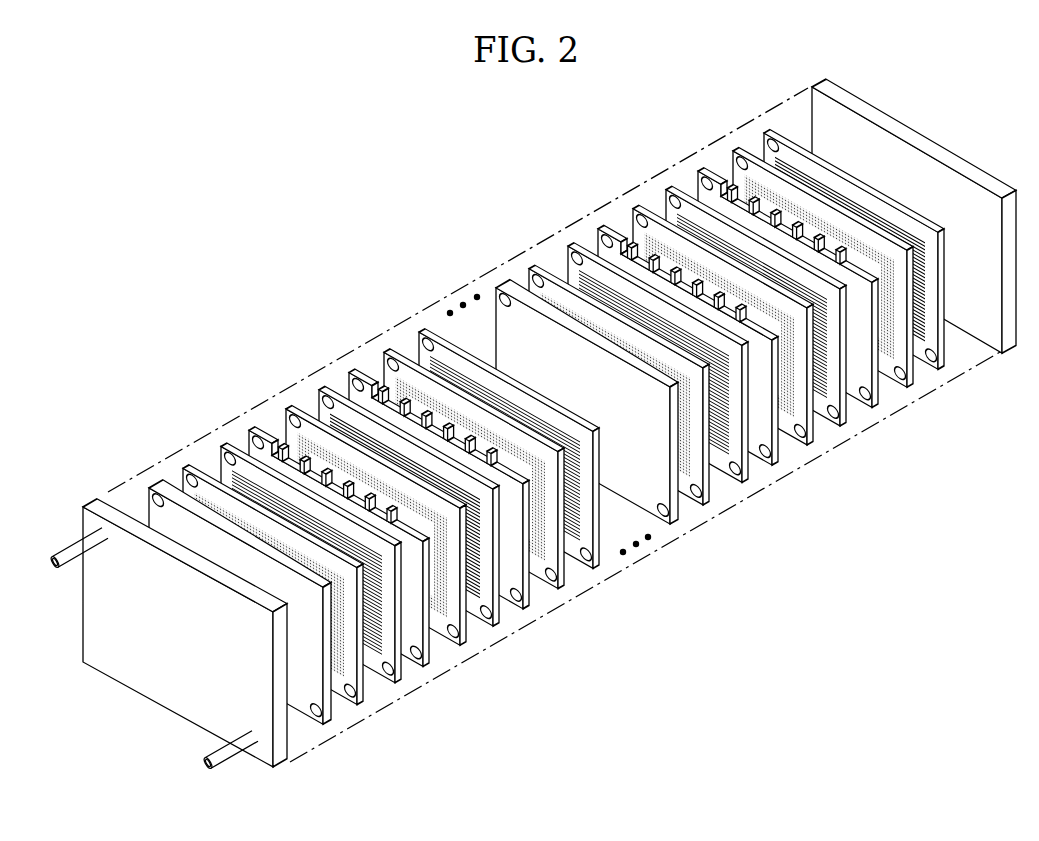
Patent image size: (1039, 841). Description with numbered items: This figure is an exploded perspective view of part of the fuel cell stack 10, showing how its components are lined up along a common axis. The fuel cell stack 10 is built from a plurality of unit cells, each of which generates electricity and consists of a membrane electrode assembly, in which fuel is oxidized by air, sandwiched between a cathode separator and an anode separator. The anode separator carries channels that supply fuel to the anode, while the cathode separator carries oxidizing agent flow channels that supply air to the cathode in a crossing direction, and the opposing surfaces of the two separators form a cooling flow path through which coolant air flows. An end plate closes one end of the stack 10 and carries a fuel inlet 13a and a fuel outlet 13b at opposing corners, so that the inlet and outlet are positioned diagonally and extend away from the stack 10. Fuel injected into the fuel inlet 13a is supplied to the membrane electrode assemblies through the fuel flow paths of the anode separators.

The fuel cell stack 10 is at (467, 140).
The fuel inlet 13a is at (70, 555).
The fuel outlet 13b is at (212, 748).